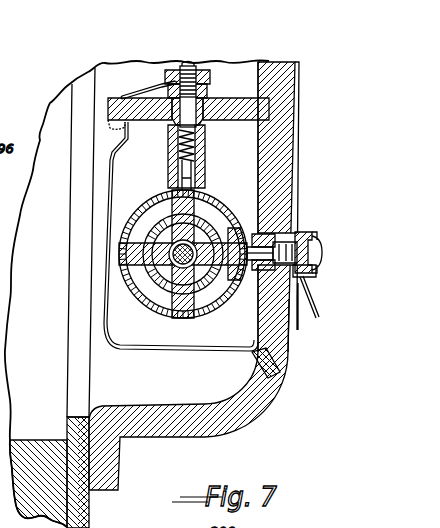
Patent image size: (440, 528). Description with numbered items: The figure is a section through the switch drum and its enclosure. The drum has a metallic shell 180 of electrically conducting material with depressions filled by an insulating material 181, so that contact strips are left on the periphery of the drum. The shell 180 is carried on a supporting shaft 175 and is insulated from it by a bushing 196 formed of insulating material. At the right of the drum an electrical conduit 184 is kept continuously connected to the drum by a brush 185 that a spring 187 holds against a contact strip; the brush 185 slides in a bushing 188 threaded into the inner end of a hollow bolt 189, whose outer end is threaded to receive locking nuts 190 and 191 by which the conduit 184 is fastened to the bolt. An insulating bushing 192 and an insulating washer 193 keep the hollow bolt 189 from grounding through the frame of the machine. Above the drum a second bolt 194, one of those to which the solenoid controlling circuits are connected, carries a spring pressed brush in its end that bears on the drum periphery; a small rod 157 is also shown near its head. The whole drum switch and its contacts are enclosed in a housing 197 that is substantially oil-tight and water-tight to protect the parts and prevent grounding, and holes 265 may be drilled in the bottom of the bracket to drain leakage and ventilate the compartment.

The rod 157 is at (133, 93).
The bolt 194 is at (192, 66).
The housing 197 is at (103, 182).
The supporting shaft 175 is at (173, 240).
The brush 185 is at (175, 165).
The metallic shell 180 is at (205, 181).
The insulating material 181 is at (219, 191).
The bushing 196 is at (150, 298).
The bushing 188 is at (296, 235).
The insulating bushing 192 is at (300, 238).
The insulating washer 193 is at (304, 245).
The spring 187 is at (310, 243).
The hollow bolt 189 is at (320, 243).
The locking nut 191 is at (316, 278).
The conduit 184 is at (318, 301).
The locking nut 190 is at (298, 283).
The holes 265 is at (280, 368).